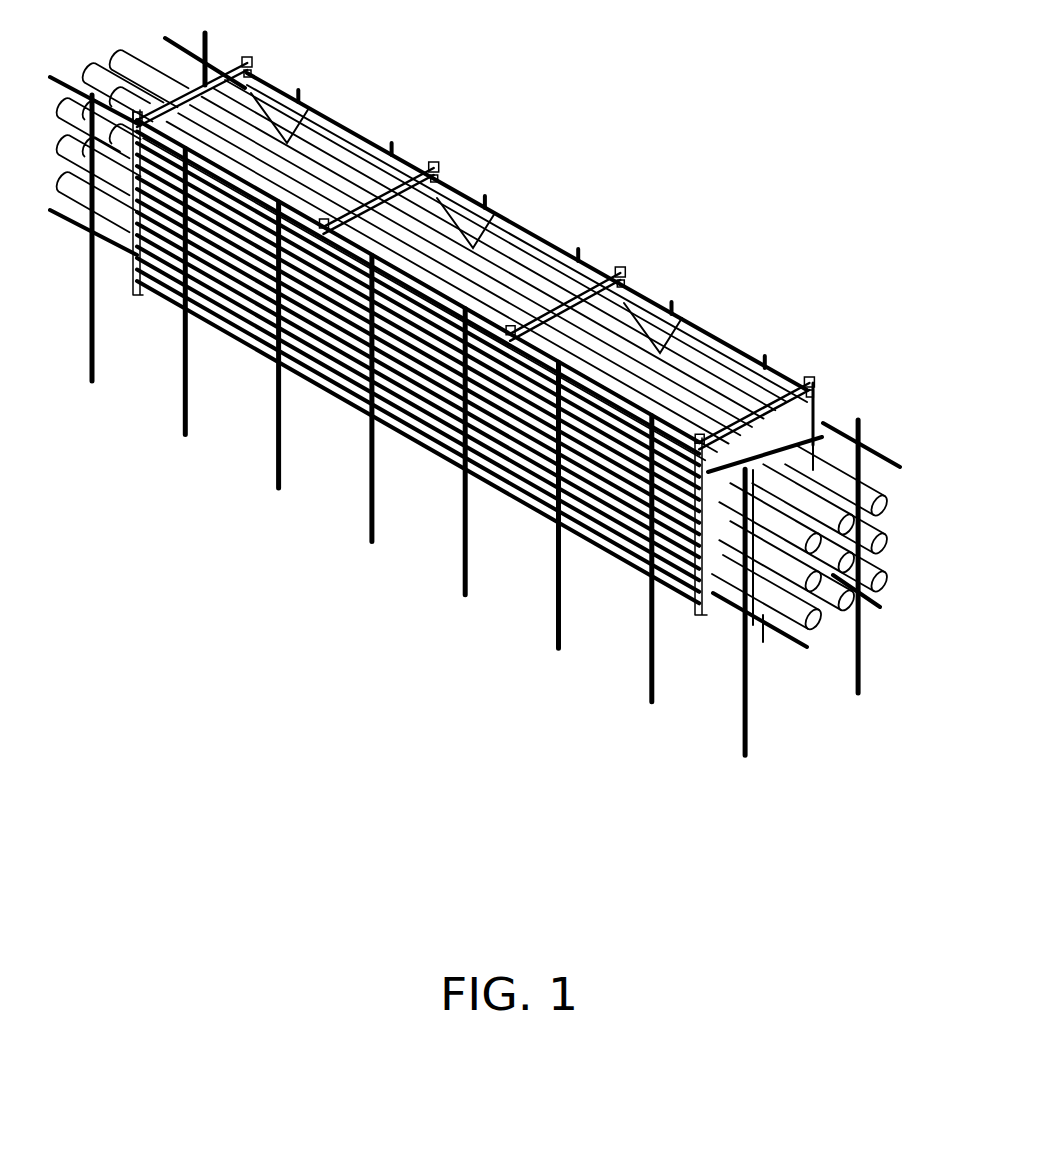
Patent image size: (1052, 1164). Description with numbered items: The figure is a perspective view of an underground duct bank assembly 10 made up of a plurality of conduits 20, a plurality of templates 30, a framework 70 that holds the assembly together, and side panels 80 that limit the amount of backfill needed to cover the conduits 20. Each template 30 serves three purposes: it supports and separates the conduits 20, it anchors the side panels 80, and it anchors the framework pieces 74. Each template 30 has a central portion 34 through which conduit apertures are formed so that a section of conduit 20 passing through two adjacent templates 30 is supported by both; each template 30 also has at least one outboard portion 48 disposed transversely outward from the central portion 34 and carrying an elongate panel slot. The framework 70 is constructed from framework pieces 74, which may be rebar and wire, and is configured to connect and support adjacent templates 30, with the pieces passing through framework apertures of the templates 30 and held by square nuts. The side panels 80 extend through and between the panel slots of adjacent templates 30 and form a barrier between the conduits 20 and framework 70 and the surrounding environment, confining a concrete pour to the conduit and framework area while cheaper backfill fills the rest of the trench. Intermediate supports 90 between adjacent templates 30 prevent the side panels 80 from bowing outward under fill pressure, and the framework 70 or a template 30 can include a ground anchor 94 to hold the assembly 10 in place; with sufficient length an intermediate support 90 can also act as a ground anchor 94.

The underground duct bank assembly 10 is at (633, 207).
The conduit 20 is at (890, 497).
The template 30 is at (253, 60).
The central portion 34 is at (417, 197).
The outboard portion 48 is at (428, 170).
The framework 70 is at (833, 420).
The framework piece 74 is at (742, 367).
The side panel 80 is at (627, 555).
The intermediate support 90 is at (180, 420).
The ground anchor 94 is at (367, 520).